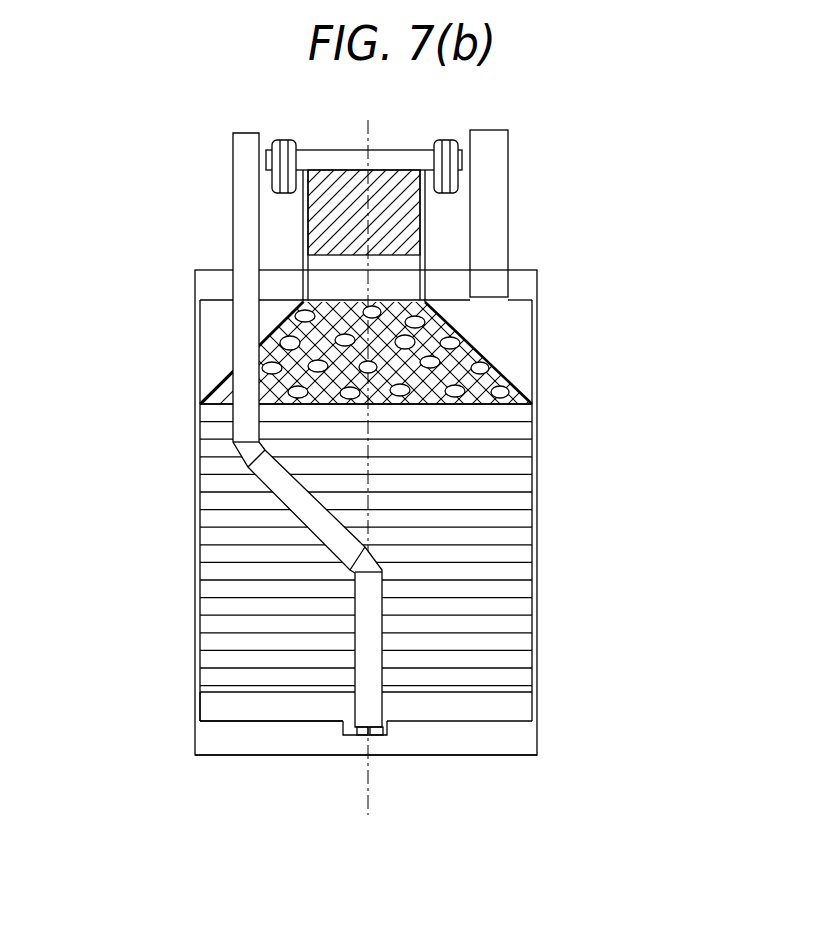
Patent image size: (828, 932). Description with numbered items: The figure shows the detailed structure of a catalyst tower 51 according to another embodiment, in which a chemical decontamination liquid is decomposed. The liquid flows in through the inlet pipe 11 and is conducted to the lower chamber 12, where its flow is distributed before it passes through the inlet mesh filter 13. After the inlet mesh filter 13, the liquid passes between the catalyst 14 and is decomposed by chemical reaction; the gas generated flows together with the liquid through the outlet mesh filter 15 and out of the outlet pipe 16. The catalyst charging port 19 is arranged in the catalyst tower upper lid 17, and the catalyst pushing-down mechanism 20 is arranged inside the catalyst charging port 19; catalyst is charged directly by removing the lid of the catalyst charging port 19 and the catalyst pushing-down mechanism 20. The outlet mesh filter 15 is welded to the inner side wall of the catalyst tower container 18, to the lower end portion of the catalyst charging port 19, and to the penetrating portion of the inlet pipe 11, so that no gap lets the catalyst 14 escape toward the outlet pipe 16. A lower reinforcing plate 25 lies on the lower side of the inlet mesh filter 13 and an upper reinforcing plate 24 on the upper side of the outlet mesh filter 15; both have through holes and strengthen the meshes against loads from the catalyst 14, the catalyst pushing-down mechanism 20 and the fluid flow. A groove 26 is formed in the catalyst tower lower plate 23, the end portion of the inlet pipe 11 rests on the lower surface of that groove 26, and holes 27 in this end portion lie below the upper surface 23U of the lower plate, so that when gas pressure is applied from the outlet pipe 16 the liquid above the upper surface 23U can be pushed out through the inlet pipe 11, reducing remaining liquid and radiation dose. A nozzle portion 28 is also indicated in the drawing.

The inlet pipe 11 is at (232, 137).
The lower chamber 12 is at (212, 717).
The inlet mesh filter 13 is at (523, 680).
The catalyst 14 is at (490, 597).
The outlet mesh filter 15 is at (497, 367).
The outlet pipe 16 is at (508, 138).
The catalyst tower upper lid 17 is at (195, 283).
The catalyst tower container 18 is at (195, 480).
The catalyst charging port 19 is at (387, 170).
The catalyst pushing-down mechanism 20 is at (407, 245).
The catalyst tower lower plate 23 is at (210, 748).
The upper surface of the catalyst tower lower plate 23U is at (237, 717).
The upper reinforcing plate 24 is at (490, 403).
The lower reinforcing plate 25 is at (498, 693).
The groove 26 is at (390, 733).
The holes 27 is at (345, 735).
The nozzle 28 is at (418, 293).
The catalyst tower 51 is at (537, 312).